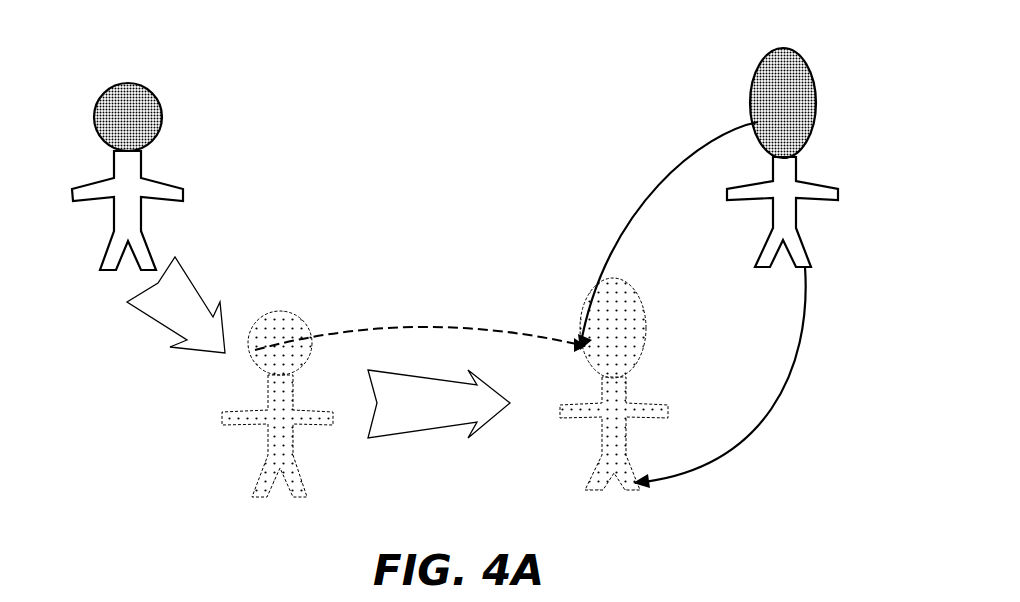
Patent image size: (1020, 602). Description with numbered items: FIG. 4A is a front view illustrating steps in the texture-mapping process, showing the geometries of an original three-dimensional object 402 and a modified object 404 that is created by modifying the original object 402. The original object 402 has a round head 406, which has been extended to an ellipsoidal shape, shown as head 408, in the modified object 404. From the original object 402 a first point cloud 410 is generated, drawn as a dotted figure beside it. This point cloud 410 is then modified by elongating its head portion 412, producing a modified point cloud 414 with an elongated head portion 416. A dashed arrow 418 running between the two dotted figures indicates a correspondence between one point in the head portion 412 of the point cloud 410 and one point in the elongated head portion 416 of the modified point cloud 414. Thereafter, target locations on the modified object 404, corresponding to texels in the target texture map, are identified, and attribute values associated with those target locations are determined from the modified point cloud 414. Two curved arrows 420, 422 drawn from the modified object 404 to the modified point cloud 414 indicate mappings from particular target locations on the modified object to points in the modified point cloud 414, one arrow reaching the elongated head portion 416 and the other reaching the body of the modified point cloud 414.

The original 3-D object 402 is at (136, 156).
The modified object 404 is at (787, 137).
The round head 406 is at (163, 117).
The head 408 is at (818, 105).
The first point cloud 410 is at (280, 377).
The head portion 412 is at (297, 316).
The modified point cloud 414 is at (595, 377).
The elongated head portion 416 is at (584, 301).
The dashed arrow 418 is at (420, 298).
The arrow 420 is at (655, 190).
The arrow 422 is at (765, 410).